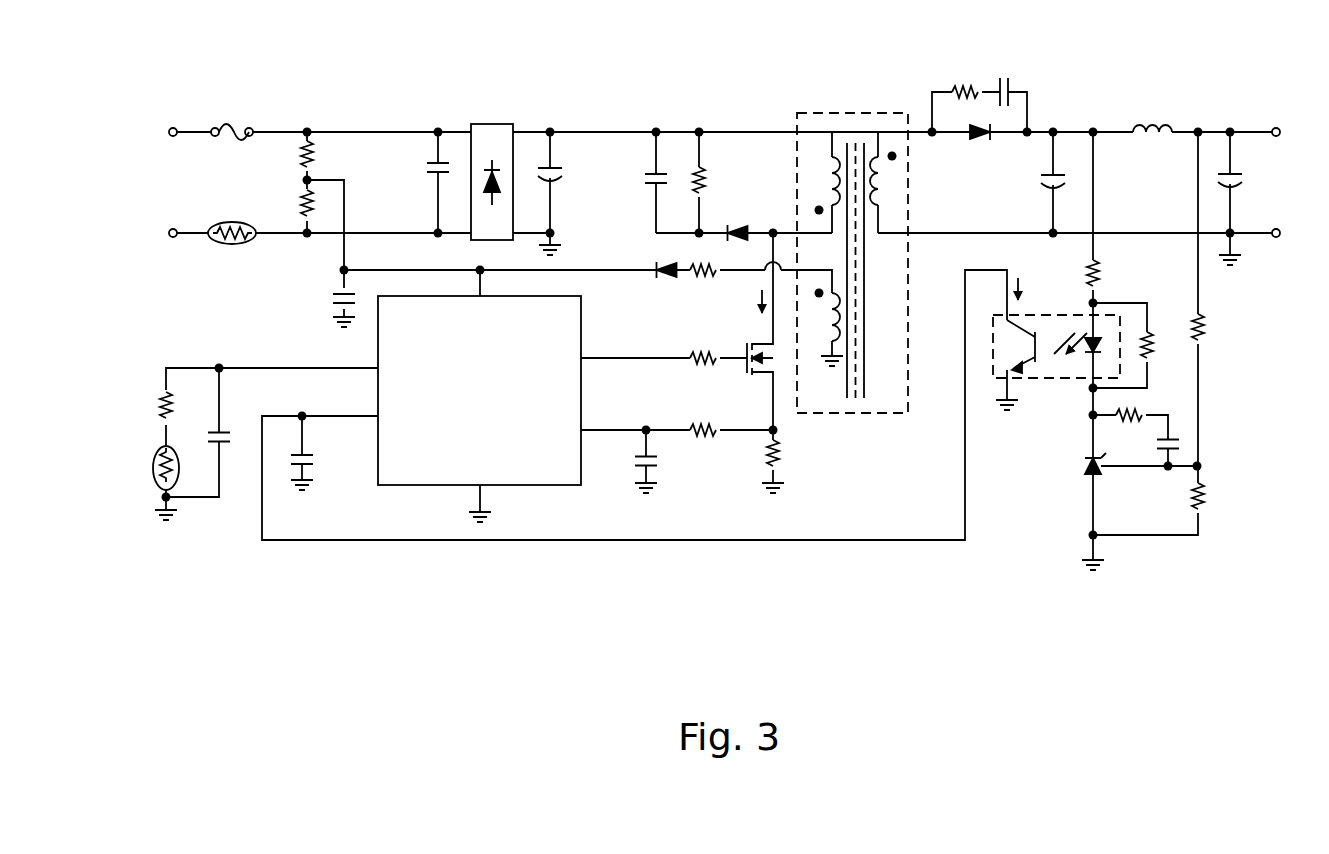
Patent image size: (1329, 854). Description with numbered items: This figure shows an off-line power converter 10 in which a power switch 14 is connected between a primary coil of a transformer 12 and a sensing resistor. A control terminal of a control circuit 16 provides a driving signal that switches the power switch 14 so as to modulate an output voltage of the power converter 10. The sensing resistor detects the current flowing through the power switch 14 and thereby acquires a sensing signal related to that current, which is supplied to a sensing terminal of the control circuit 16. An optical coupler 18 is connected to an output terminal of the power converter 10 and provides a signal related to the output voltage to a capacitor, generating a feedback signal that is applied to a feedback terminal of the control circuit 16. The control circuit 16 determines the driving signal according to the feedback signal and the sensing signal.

The off-line power converter 10 is at (1230, 80).
The transformer 12 is at (850, 112).
The power switch 14 is at (745, 376).
The control circuit 16 is at (583, 313).
The optical coupler 18 is at (1055, 380).